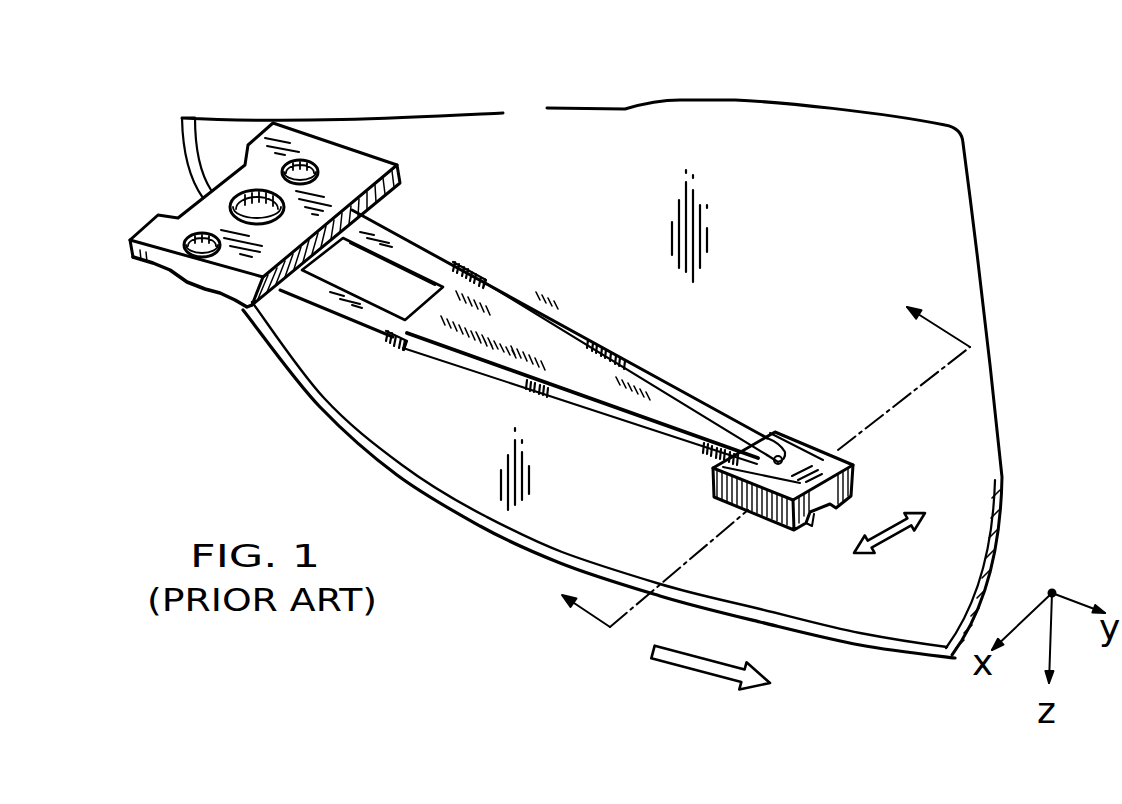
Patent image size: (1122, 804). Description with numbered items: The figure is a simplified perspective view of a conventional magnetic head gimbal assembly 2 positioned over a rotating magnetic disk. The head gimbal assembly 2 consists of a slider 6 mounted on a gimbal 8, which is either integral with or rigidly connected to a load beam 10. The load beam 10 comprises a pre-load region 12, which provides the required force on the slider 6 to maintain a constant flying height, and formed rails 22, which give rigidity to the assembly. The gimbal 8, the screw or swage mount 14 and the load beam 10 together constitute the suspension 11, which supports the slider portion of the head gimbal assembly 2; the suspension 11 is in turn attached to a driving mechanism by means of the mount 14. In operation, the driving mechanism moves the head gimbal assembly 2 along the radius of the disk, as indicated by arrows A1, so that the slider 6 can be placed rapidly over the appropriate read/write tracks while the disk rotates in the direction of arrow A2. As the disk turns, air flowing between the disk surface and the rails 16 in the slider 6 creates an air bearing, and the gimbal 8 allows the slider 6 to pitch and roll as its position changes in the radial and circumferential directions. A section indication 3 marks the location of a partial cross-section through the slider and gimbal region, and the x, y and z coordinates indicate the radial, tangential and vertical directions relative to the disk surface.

The head gimbal assembly 2 is at (509, 200).
The section line 3- 3 is at (741, 453).
The slider 6 is at (747, 505).
The gimbal 8 is at (797, 467).
The load beam 10 is at (502, 333).
The suspension 11 is at (580, 330).
The pre-load region 12 is at (410, 257).
The screw or swage mount 14 is at (237, 195).
The rails 16 is at (838, 506).
The formed rails 22 is at (642, 377).
The arrows A1 is at (894, 540).
The arrow A2 is at (684, 673).